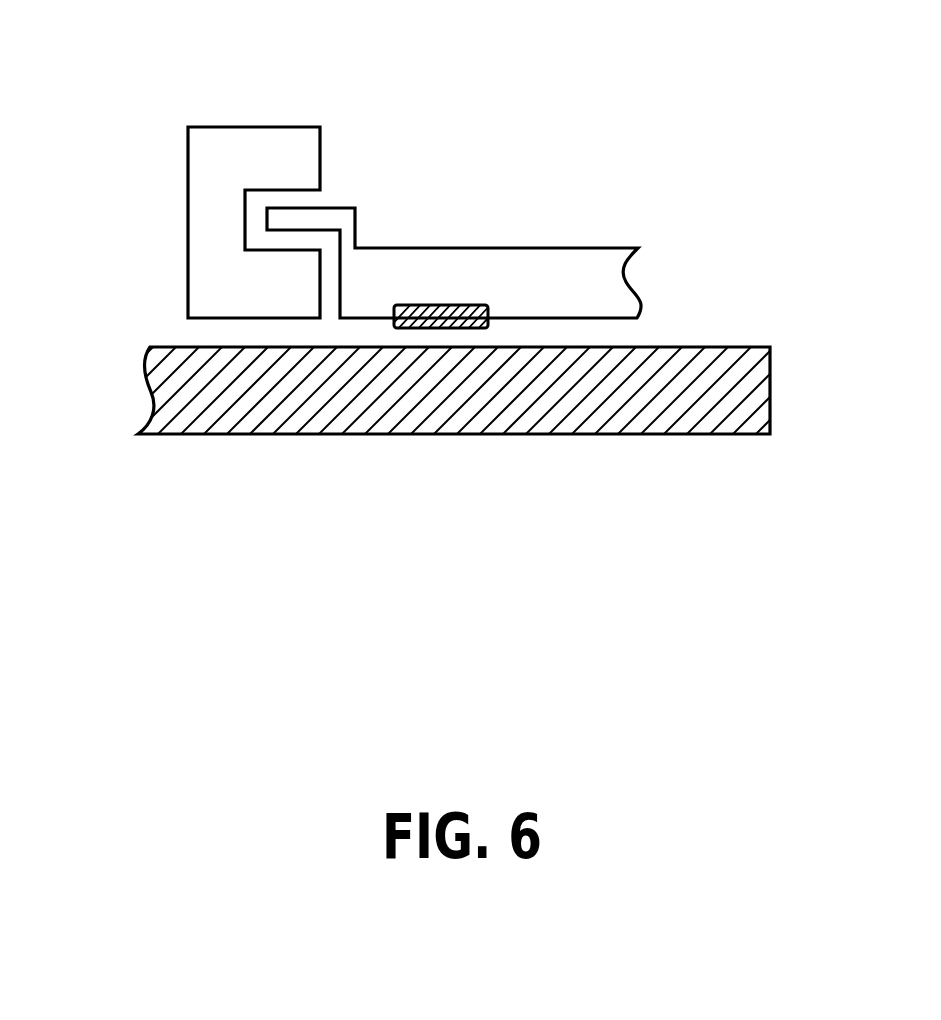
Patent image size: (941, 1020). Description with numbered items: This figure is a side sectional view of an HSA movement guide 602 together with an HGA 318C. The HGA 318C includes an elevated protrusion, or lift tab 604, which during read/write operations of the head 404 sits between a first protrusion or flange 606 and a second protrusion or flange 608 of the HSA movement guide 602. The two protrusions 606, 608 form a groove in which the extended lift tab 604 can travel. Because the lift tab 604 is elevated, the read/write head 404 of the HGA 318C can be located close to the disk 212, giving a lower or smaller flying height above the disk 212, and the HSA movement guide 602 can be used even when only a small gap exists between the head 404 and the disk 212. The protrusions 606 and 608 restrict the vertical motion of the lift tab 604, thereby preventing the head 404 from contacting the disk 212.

The HSA movement guide 602 is at (188, 233).
The elevated protrusion (lift tab) 604 is at (327, 218).
The first protrusion (flange) 606 is at (258, 127).
The second protrusion (flange) 608 is at (258, 318).
The HGA 318C is at (577, 277).
The head 404 is at (433, 305).
The disk 212 is at (770, 393).